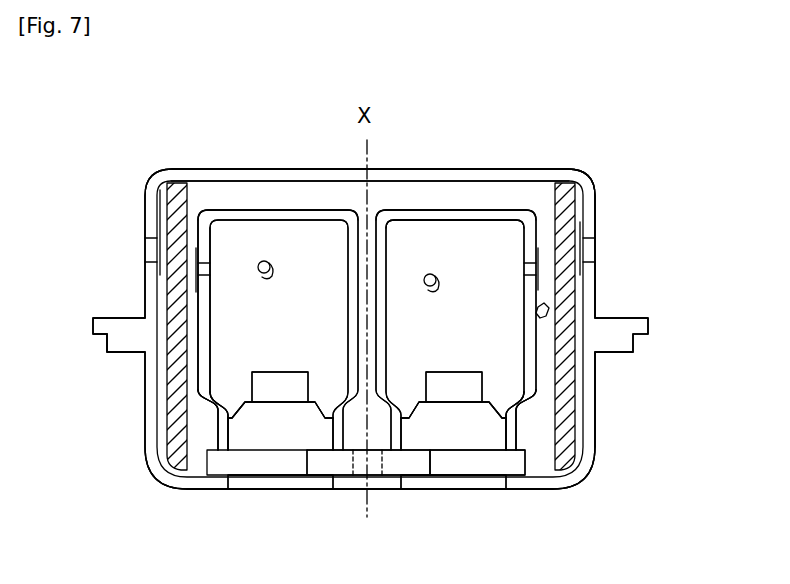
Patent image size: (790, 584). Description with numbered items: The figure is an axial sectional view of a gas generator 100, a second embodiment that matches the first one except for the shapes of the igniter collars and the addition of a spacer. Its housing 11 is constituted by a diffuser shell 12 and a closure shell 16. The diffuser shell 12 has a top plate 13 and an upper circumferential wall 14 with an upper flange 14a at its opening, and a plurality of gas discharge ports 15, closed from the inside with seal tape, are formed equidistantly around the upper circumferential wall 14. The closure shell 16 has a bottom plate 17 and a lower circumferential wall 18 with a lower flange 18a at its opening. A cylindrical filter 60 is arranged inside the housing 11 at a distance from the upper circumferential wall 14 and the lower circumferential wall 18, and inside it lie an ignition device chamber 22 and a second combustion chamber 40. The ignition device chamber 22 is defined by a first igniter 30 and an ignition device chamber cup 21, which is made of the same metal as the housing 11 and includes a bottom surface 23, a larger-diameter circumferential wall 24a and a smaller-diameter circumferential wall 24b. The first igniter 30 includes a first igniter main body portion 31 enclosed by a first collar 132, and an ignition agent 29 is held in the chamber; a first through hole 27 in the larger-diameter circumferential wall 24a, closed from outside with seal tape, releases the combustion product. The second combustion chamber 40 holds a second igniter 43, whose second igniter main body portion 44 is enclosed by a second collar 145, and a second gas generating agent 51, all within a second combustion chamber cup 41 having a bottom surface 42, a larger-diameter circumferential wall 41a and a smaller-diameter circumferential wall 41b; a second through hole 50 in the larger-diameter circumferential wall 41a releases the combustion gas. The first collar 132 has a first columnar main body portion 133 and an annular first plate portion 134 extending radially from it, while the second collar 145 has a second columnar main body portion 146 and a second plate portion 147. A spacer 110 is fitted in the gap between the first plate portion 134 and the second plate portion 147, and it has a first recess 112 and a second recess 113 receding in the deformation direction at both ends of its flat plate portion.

The gas generator 100 is at (450, 158).
The housing 11 is at (732, 287).
The diffuser shell 12 is at (600, 285).
The top plate 13 is at (303, 169).
The upper circumferential wall 14 is at (590, 172).
The upper flange 14a is at (118, 318).
The gas discharge port 15 is at (590, 250).
The closure shell 16 is at (602, 374).
The bottom plate 17 is at (528, 490).
The lower circumferential wall 18 is at (598, 443).
The lower flange 18a is at (116, 352).
The ignition device chamber cup 21 is at (229, 197).
The ignition device chamber 22 is at (319, 252).
The bottom surface 23 is at (265, 203).
The larger-diameter circumferential wall 24a is at (213, 292).
The smaller-diameter circumferential wall 24b is at (213, 436).
The first through hole 27 is at (211, 269).
The ignition agent 29 is at (276, 268).
The first igniter 30 is at (274, 364).
The first igniter main body portion 31 is at (288, 385).
The second combustion chamber 40 is at (499, 252).
The second combustion chamber cup 41 is at (407, 196).
The larger-diameter circumferential wall 41a is at (390, 242).
The smaller-diameter circumferential wall 41b is at (512, 427).
The bottom surface 42 is at (470, 210).
The second igniter 43 is at (463, 364).
The second igniter main body portion 44 is at (445, 380).
The second through hole 50 is at (522, 270).
The second gas generating agent 51 is at (425, 283).
The cylindrical filter 60 is at (180, 397).
The spacer 110 is at (340, 458).
The first recess 112 is at (300, 460).
The second recess 113 is at (435, 460).
The first collar 132 is at (301, 494).
The first columnar main body portion 133 is at (252, 415).
The first plate portion 134 is at (225, 465).
The second collar 145 is at (448, 494).
The second columnar main body portion 146 is at (407, 435).
The second plate portion 147 is at (495, 465).